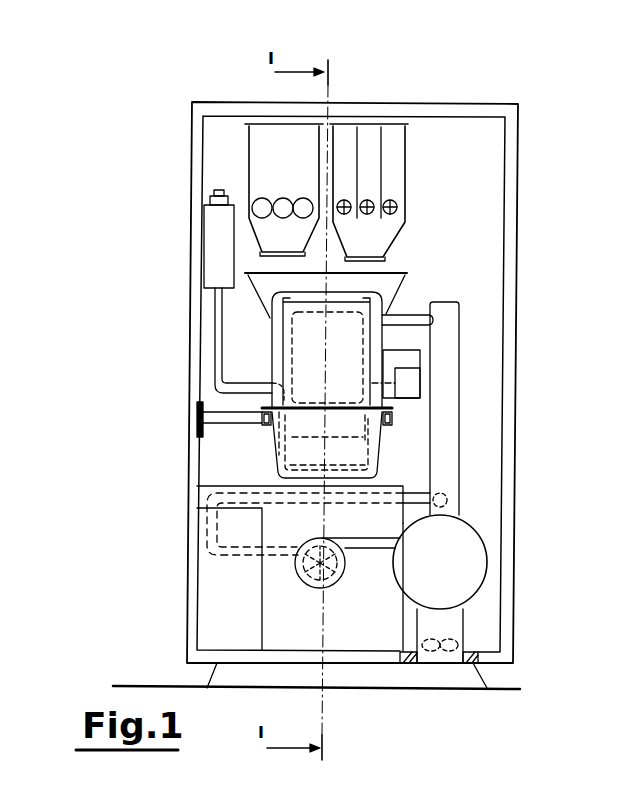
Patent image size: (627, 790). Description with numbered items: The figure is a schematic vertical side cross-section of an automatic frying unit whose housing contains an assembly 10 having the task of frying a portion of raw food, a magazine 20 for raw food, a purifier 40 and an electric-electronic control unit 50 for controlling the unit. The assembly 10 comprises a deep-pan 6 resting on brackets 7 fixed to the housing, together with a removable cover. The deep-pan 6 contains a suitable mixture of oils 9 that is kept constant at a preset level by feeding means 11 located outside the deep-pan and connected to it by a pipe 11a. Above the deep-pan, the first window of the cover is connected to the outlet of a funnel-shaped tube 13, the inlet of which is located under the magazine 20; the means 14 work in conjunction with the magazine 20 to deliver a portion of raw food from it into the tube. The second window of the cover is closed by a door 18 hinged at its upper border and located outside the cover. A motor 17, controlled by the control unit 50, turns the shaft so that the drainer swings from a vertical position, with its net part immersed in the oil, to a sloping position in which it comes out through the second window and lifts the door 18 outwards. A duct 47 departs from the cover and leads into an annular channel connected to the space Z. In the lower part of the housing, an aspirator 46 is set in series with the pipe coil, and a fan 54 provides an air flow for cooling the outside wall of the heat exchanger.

The deep-pan 6 is at (378, 455).
The brackets 7 is at (225, 420).
The mixture of oils 9 is at (280, 440).
The assembly 10 is at (253, 362).
The feeding means 11 is at (214, 242).
The pipe 11a is at (220, 332).
The funnel-shaped tube 13 is at (400, 317).
The means for delivering a portion of raw food 14 is at (277, 242).
The motor 17 is at (405, 385).
The door 18 is at (285, 336).
The magazine 20 is at (420, 170).
The purifier 40 is at (432, 625).
The aspirator 46 is at (308, 589).
The duct 47 is at (385, 292).
The electric-electronic control unit 50 is at (240, 609).
The fan 54 is at (450, 652).